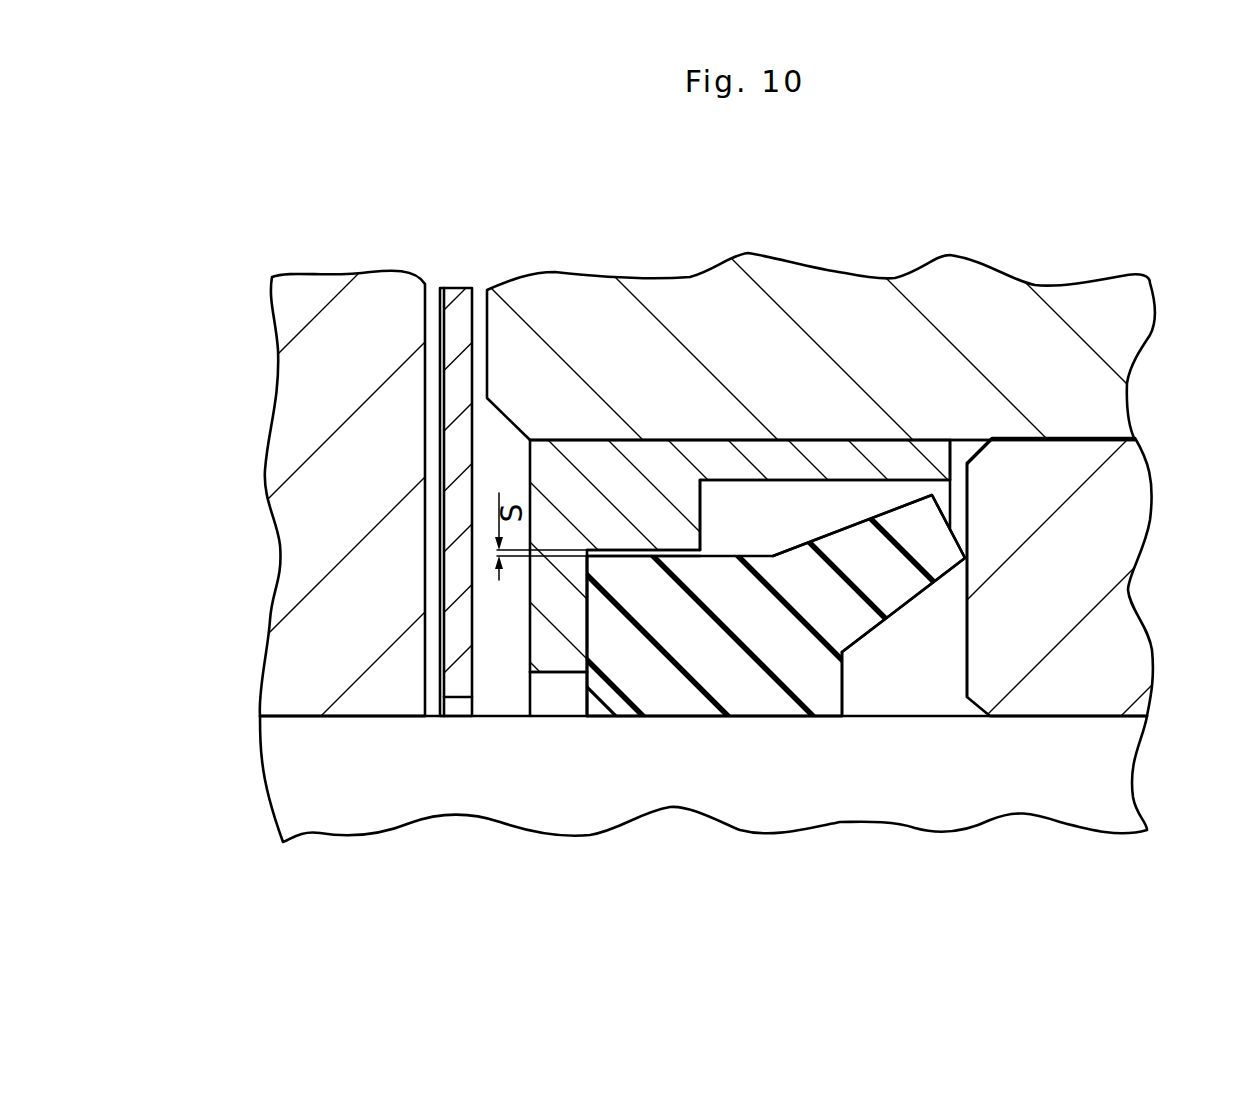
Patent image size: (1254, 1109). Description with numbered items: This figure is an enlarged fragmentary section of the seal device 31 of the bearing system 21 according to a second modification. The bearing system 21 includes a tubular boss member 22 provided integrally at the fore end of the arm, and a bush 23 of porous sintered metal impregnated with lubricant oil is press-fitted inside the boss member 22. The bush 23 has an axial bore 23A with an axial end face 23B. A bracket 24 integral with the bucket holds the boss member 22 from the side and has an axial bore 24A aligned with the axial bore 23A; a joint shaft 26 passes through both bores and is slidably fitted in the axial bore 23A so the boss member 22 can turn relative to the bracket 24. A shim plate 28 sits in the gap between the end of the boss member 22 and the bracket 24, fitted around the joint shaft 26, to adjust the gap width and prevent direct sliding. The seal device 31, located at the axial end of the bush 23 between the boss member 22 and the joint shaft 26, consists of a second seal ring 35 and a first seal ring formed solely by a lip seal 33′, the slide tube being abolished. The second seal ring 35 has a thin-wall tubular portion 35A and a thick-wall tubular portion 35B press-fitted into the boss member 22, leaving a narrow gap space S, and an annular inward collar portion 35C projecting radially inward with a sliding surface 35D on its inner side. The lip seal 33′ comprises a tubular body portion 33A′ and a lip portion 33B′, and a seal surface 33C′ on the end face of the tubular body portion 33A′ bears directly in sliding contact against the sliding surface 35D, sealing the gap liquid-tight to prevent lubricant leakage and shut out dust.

The bearing system 21 is at (1128, 262).
The boss member 22 is at (1068, 300).
The bush 23 is at (1120, 567).
The axial bore 23A is at (1115, 717).
The axial end face 23B is at (967, 667).
The bracket 24 is at (303, 366).
The axial bore 24A is at (305, 717).
The joint shaft 26 is at (328, 813).
The shim plate 28 is at (452, 291).
The seal device 31 is at (873, 426).
The lip seal 33′ is at (743, 580).
The tubular body portion 33A′ is at (705, 640).
The lip portion 33B′ is at (897, 587).
The seal surface 33C′ is at (596, 585).
The second seal ring 35 is at (738, 452).
The thin-wall tubular portion 35A is at (922, 458).
The thick-wall tubular portion 35B is at (657, 470).
The annular inward collar portion 35C is at (550, 650).
The sliding surface 35D is at (603, 547).